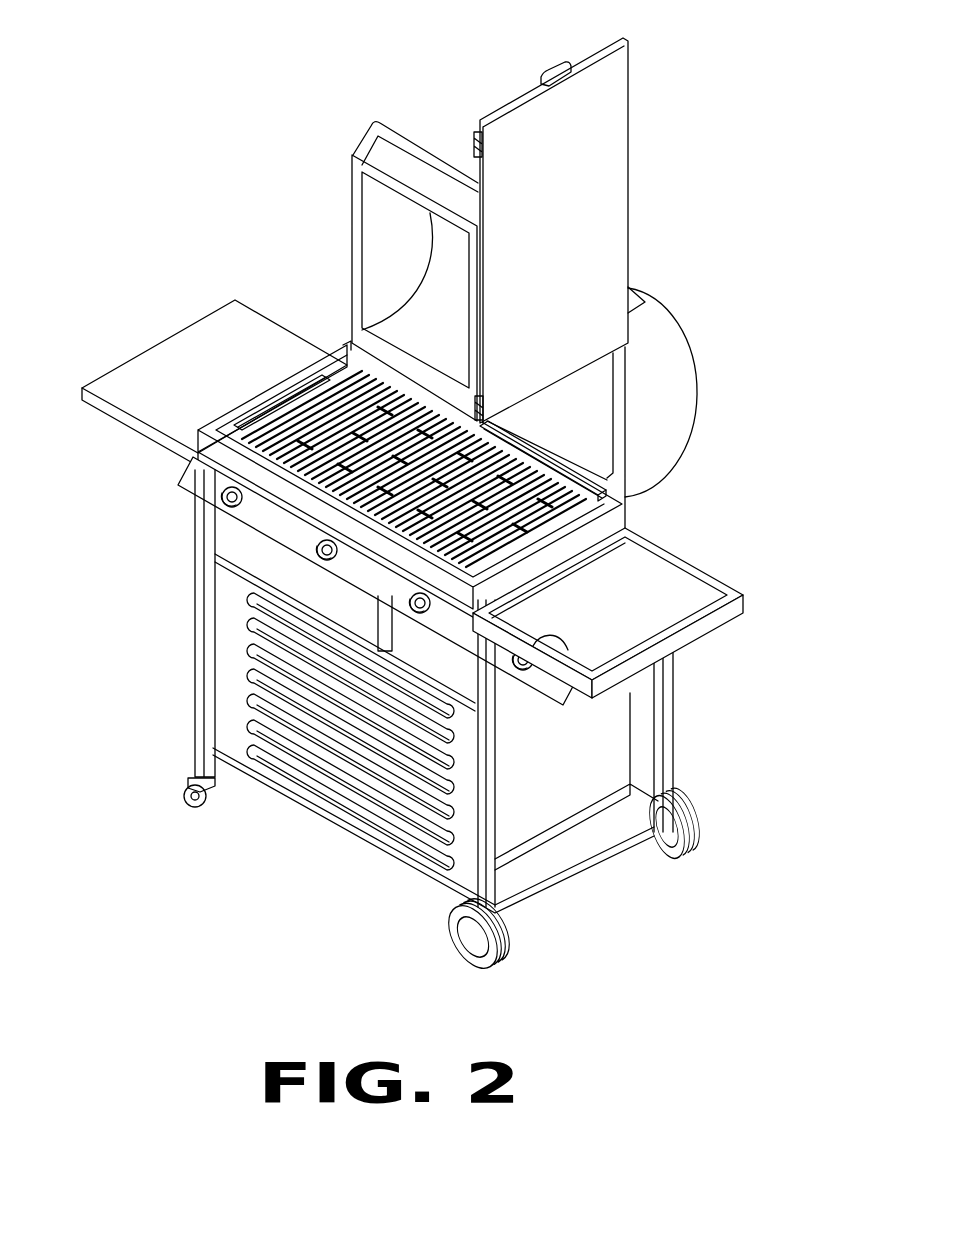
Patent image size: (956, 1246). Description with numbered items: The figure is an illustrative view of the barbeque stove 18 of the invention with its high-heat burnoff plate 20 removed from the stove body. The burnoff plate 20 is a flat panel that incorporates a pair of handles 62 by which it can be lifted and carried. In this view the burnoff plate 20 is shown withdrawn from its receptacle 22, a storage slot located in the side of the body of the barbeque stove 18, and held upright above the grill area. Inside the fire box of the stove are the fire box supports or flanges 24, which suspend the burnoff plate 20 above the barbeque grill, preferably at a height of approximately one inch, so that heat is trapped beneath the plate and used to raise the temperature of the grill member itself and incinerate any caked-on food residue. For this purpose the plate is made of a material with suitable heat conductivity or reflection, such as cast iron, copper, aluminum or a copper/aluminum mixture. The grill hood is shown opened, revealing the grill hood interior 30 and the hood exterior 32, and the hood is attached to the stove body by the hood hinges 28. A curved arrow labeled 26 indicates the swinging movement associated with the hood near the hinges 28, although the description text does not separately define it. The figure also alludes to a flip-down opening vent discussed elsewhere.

The barbeque stove 18 is at (172, 206).
The burnoff plate 20 is at (598, 262).
The receptacle 22 is at (627, 541).
The fire box supports or flanges 24 is at (283, 407).
The lid pivot direction 26 is at (695, 323).
The hood hinges 28 is at (347, 348).
The grill hood interior 30 is at (464, 329).
The hood exterior 32 is at (362, 153).
The handles 62 is at (482, 150).